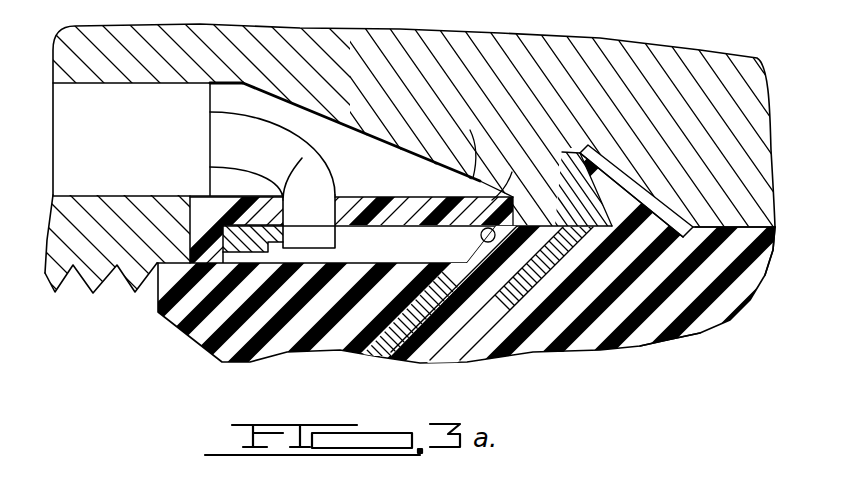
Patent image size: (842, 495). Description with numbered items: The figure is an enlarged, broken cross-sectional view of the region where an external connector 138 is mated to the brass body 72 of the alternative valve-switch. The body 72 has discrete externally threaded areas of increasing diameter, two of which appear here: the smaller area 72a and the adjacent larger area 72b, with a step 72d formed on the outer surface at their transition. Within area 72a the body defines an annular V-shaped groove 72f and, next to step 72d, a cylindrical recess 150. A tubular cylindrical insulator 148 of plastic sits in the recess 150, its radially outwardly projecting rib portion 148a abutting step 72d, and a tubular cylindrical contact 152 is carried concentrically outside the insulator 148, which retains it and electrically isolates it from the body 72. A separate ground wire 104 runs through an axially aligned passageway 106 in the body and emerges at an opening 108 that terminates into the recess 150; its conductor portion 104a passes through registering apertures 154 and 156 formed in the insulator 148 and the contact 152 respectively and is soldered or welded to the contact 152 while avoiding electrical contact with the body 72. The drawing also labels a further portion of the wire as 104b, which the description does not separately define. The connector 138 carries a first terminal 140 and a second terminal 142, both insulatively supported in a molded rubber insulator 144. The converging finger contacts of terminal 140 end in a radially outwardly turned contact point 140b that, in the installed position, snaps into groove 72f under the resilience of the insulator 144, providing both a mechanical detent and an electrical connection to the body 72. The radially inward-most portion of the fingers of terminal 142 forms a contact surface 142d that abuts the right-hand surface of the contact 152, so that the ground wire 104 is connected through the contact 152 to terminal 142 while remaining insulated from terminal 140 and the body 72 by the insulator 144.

The body 72 is at (630, 77).
The area of increased diameter 72a is at (763, 235).
The area of increased diameter 72b is at (72, 292).
The step 72d is at (197, 221).
The annular V-shaped groove 72f is at (650, 192).
The ground wire 104 is at (140, 146).
The conductor portion 104a is at (250, 127).
The edge of nozzle member 104b is at (197, 88).
The passageway 106 is at (76, 92).
The opening 108 is at (393, 173).
The connector 138 is at (672, 342).
The first terminal 140 is at (452, 350).
The contact point 140b is at (620, 176).
The second terminal 142 is at (378, 345).
The contact surface 142d is at (481, 194).
The insulator 144 is at (590, 333).
The insulator 148 is at (452, 202).
The rib portion 148a is at (207, 255).
The cylindrical recess 150 is at (526, 216).
The contact 152 is at (247, 250).
The aperture 154 is at (256, 172).
The aperture 156 is at (323, 238).